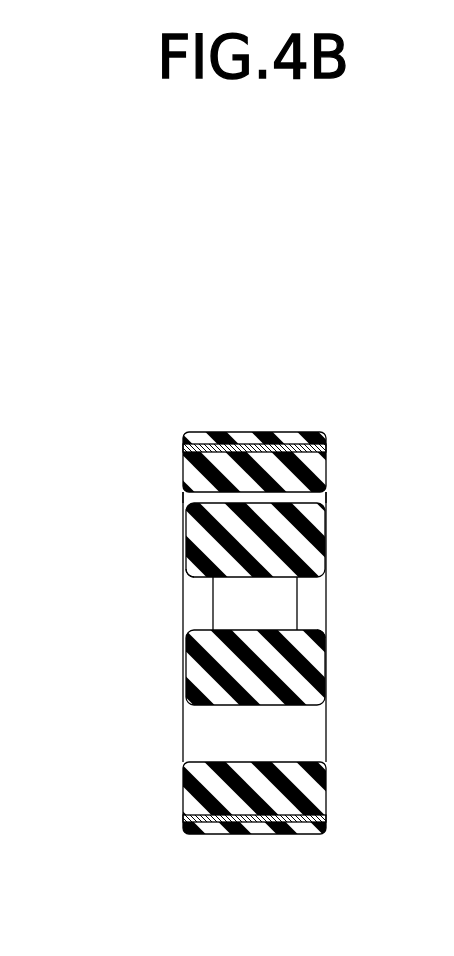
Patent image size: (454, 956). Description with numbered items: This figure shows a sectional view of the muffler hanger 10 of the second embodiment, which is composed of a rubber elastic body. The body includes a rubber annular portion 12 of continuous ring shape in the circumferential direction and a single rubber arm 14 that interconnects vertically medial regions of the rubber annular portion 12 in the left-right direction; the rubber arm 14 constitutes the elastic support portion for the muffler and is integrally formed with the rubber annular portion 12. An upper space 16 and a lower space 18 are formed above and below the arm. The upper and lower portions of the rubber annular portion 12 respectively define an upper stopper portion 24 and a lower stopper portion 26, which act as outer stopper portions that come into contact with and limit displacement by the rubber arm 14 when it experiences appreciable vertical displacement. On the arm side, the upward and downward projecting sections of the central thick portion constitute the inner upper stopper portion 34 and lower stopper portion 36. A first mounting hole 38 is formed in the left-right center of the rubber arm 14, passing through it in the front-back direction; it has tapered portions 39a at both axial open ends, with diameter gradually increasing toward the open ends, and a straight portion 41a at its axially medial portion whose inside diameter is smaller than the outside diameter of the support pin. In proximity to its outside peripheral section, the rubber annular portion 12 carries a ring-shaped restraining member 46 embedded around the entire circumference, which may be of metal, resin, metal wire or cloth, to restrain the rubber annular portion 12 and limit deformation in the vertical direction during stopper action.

The muffler hanger 10 is at (317, 405).
The rubber annular portion 12 is at (227, 478).
The rubber arm 14 is at (227, 478).
The upper space 16 is at (214, 505).
The lower space 18 is at (227, 478).
The upper stopper portion 24 is at (257, 456).
The lower stopper portion 26 is at (289, 813).
The upper stopper portion 34 is at (262, 513).
The lower stopper portion 36 is at (318, 593).
The first mounting hole 38 is at (240, 628).
The tapered portion 39a is at (191, 583).
The straight portion 41a is at (278, 590).
The restraining member 46 is at (206, 445).